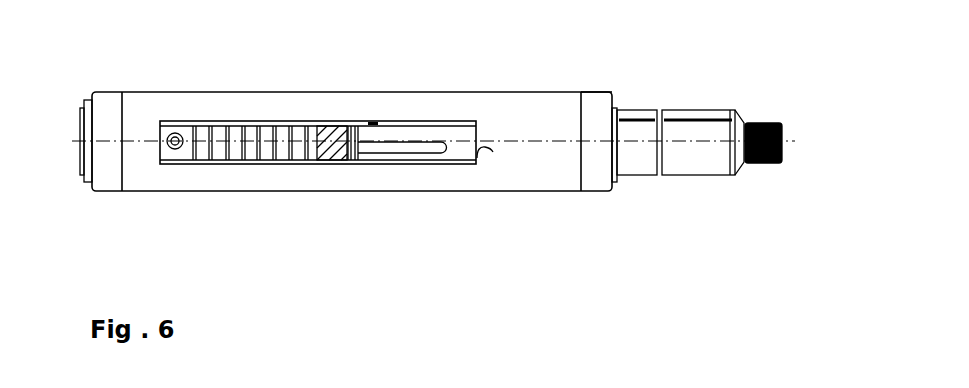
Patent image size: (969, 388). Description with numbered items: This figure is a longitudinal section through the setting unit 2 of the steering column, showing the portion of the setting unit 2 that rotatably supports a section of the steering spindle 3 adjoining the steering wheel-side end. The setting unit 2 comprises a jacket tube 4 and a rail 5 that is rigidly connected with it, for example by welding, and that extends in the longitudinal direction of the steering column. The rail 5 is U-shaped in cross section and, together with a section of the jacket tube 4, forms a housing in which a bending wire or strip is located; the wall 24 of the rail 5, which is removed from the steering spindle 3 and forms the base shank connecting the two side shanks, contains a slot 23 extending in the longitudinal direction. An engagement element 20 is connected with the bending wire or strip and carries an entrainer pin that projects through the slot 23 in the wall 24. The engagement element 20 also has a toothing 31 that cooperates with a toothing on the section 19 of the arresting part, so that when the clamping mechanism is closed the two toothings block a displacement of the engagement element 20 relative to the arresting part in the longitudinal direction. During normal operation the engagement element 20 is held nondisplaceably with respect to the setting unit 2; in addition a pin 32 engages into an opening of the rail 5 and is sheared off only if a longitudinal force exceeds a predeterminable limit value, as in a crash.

The setting unit 2 is at (533, 92).
The steering spindle 3 is at (675, 138).
The jacket tube 4 is at (562, 170).
The rail 5 is at (427, 121).
The section of the arresting part 19 is at (325, 162).
The engagement element 20 is at (227, 160).
The slot 23 is at (388, 150).
The wall 24 is at (493, 152).
The toothing of the engagement element 31 is at (250, 121).
The pin 32 is at (172, 149).